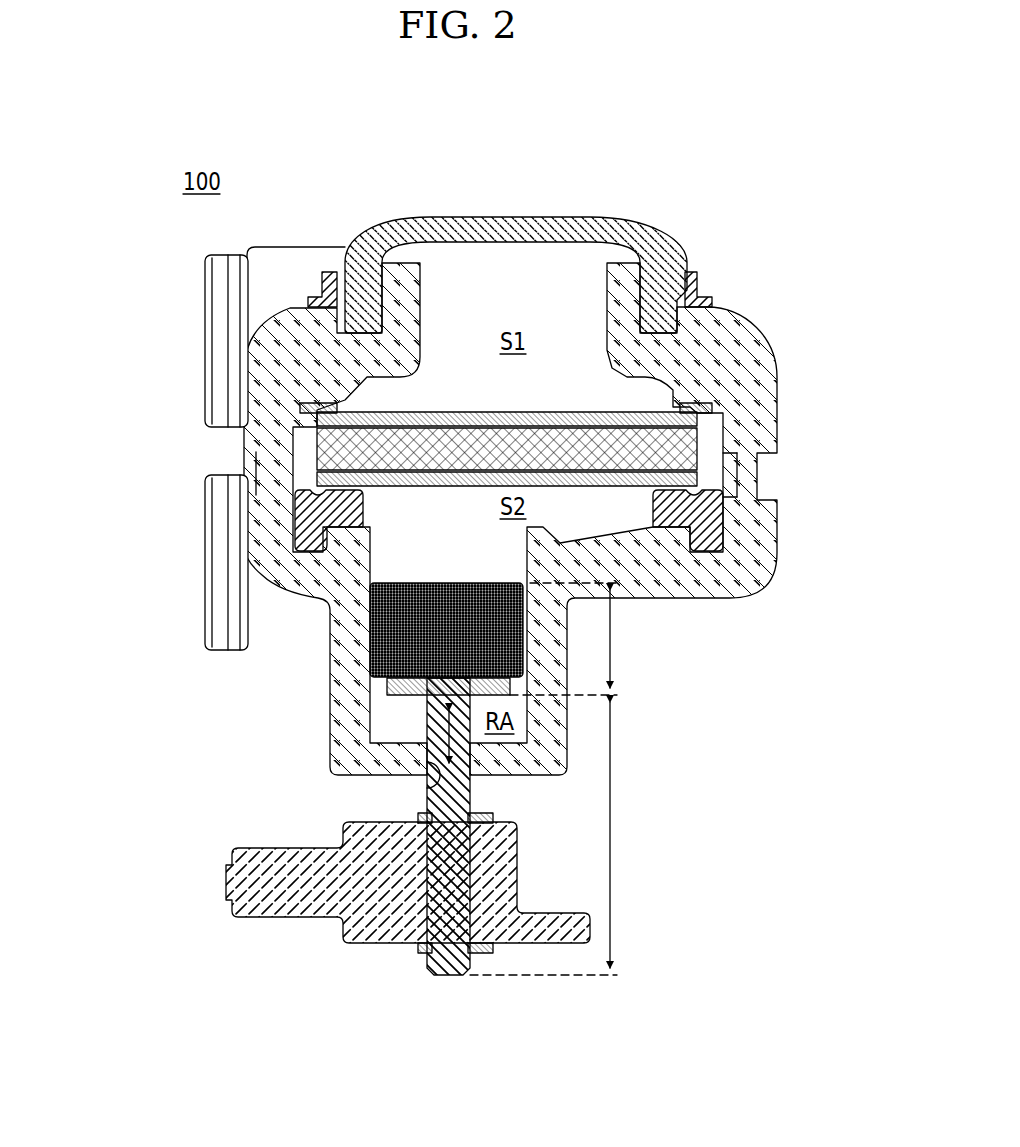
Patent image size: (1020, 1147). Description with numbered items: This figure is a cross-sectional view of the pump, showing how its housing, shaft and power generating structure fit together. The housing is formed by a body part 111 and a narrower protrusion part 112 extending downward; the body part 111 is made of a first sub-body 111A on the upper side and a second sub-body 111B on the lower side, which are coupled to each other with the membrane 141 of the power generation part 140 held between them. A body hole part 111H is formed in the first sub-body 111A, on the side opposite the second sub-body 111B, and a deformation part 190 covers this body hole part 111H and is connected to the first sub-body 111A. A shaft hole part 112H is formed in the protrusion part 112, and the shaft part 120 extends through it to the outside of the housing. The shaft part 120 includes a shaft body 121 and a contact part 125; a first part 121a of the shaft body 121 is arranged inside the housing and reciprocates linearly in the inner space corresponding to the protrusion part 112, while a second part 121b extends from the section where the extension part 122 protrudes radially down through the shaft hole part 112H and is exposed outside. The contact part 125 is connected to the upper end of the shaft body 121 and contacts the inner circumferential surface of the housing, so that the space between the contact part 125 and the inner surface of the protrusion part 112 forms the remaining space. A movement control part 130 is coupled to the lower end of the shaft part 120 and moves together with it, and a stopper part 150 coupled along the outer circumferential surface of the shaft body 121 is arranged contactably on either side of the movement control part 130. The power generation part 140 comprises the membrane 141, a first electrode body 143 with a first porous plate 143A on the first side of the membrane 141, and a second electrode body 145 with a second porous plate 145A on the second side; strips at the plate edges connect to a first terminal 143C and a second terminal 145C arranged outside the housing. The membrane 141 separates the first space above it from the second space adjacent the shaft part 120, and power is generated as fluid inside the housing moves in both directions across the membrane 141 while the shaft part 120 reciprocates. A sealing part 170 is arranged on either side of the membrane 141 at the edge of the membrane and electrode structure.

The body part 111 is at (585, 469).
The first sub-body 111A is at (765, 393).
The second sub-body 111B is at (765, 517).
The body hole part 111H is at (607, 287).
The protrusion part 112 is at (340, 683).
The shaft hole part 112H is at (427, 792).
The shaft part 120 is at (522, 779).
The shaft body 121 is at (470, 800).
The first part 121a is at (587, 639).
The second part 121b is at (568, 838).
The extension part 122 is at (390, 690).
The contact part 125 is at (530, 660).
The movement control part 130 is at (252, 841).
The power generation part 140 is at (364, 452).
The membrane 141 is at (318, 440).
The first electrode body 143 is at (379, 341).
The first porous plate 143A is at (320, 416).
The first terminal 143C is at (205, 319).
The second electrode body 145 is at (392, 561).
The second porous plate 145A is at (320, 484).
The second terminal 145C is at (118, 510).
The stopper part 150 is at (493, 818).
The sealing part 170 is at (705, 410).
The deformation part 190 is at (620, 240).